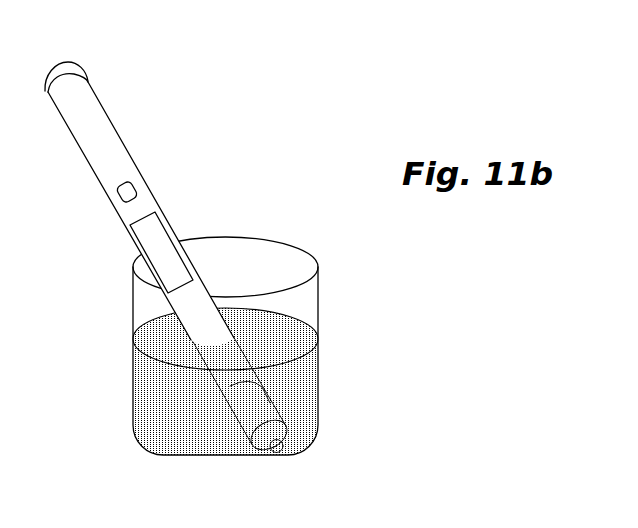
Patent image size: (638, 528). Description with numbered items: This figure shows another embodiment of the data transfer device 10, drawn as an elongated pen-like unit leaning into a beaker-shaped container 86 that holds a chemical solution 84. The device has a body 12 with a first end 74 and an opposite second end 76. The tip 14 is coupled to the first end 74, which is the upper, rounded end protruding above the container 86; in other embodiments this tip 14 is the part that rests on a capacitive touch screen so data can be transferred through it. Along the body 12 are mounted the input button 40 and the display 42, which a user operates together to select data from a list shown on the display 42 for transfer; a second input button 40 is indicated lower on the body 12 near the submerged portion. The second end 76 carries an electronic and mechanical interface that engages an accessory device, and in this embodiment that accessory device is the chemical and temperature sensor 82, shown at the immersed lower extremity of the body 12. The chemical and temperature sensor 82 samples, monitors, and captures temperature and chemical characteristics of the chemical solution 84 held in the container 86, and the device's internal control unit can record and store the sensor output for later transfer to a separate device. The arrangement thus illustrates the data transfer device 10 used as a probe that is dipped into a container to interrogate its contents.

The data transfer device 10 is at (219, 252).
The body 12 is at (106, 144).
The tip 14 is at (56, 63).
The first end 74 is at (87, 83).
The input button 40 is at (115, 197).
The display 42 is at (156, 240).
The second end 76 is at (222, 382).
The chemical and temperature sensor 82 is at (274, 450).
The chemical solution 84 is at (152, 382).
The container 86 is at (318, 298).